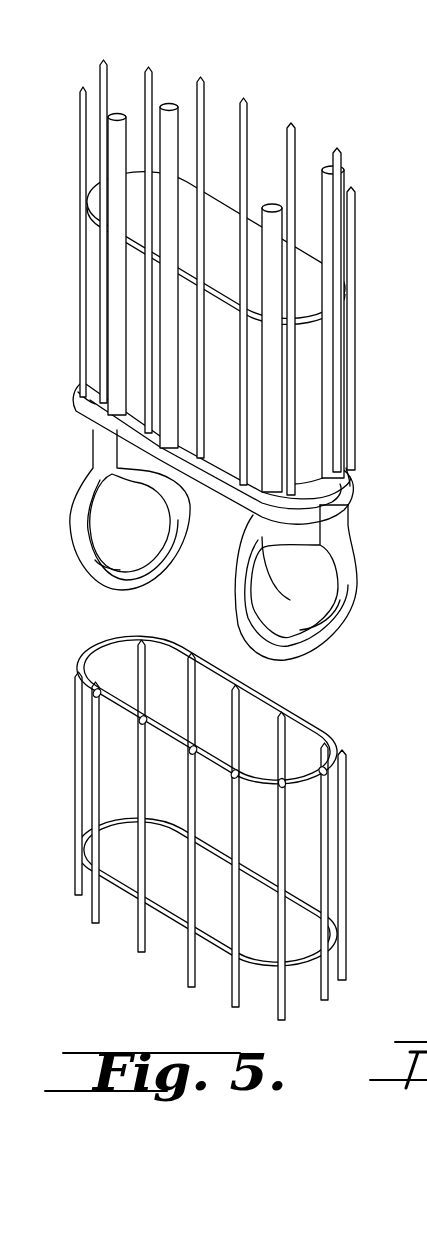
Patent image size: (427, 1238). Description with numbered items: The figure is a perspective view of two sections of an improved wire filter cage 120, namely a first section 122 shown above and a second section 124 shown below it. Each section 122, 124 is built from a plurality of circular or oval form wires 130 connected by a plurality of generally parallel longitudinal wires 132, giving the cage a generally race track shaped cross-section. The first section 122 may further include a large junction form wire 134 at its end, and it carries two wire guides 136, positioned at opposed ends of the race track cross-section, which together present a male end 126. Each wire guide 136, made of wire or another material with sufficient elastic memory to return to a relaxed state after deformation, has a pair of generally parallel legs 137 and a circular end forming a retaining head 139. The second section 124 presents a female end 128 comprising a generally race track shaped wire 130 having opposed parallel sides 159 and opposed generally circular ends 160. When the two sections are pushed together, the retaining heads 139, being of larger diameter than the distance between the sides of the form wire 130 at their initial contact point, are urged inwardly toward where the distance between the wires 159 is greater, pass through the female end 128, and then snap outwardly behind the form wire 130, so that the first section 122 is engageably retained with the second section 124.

The wire filter cage 120 is at (86, 468).
The first section 122 is at (352, 387).
The second section 124 is at (221, 733).
The male end 126 is at (350, 517).
The female end 128 is at (316, 713).
The form wires 130 is at (328, 256).
The longitudinal wires 132 is at (207, 93).
The large junction form wire 134 is at (345, 470).
The wire guides 136 is at (97, 440).
The legs 137 is at (263, 537).
The retaining head 139 is at (93, 565).
The parallel sides 159 is at (173, 739).
The circular ends 160 is at (117, 635).